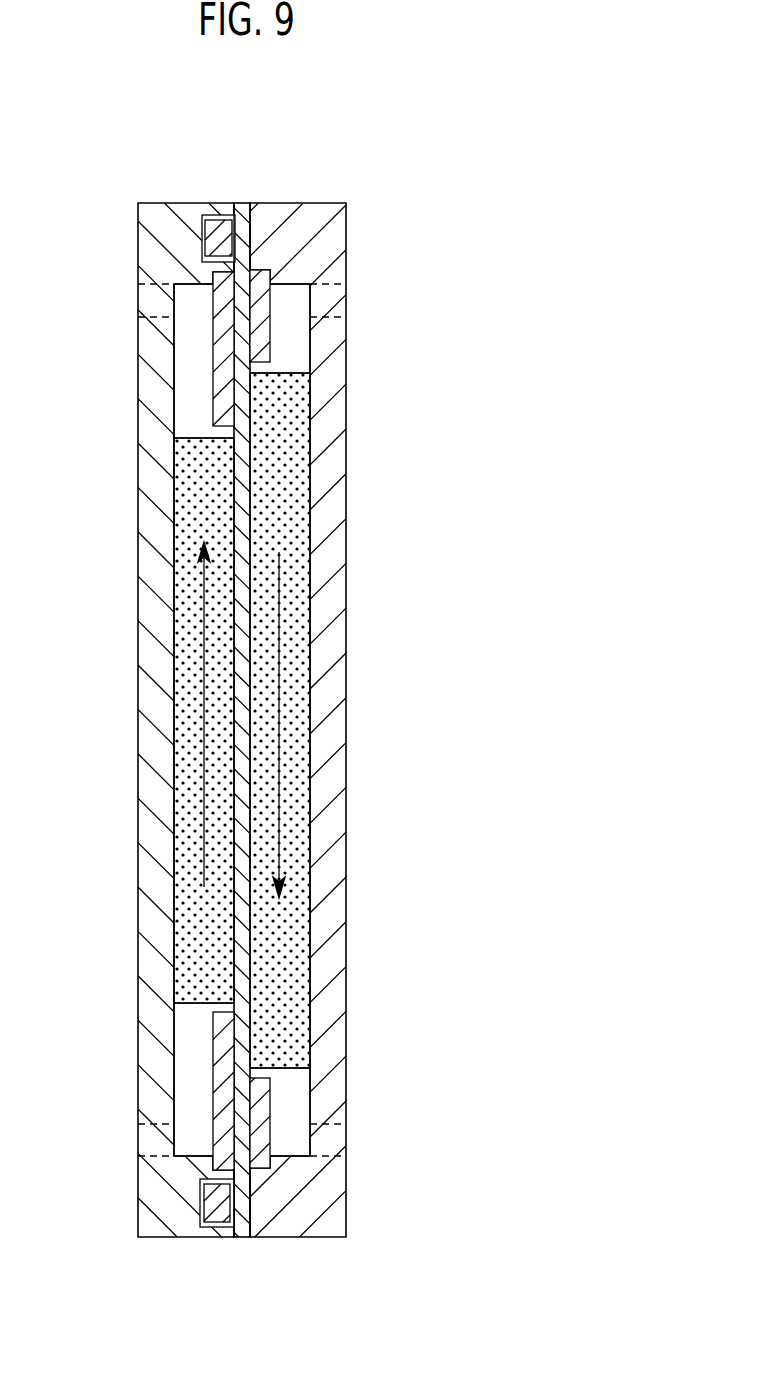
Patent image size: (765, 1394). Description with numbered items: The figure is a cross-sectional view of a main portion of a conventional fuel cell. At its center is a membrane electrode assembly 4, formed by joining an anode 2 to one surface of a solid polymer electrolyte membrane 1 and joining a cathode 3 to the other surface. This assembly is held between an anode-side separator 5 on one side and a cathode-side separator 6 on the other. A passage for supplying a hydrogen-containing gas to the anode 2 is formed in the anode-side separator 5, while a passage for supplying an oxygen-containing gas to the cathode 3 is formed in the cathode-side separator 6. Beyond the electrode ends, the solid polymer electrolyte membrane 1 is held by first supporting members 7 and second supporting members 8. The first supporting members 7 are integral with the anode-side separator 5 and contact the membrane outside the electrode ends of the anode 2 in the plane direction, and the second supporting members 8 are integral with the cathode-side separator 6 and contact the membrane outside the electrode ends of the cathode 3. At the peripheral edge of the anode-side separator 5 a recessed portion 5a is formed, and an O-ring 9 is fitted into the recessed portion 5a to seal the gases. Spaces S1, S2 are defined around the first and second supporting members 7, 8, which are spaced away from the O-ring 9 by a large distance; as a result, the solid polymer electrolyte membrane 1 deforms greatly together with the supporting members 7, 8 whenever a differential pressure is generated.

The solid polymer electrolyte membrane 1 is at (245, 729).
The anode 2 is at (190, 659).
The cathode 3 is at (297, 648).
The membrane electrode assembly 4 is at (238, 692).
The anode-side separator 5 is at (152, 487).
The recessed portion 5a is at (240, 226).
The cathode-side separator 6 is at (326, 515).
The first supporting member 7 is at (222, 371).
The second supporting member 8 is at (263, 345).
The O-ring 9 is at (214, 1207).
The space S1 is at (185, 295).
The space S2 is at (297, 300).